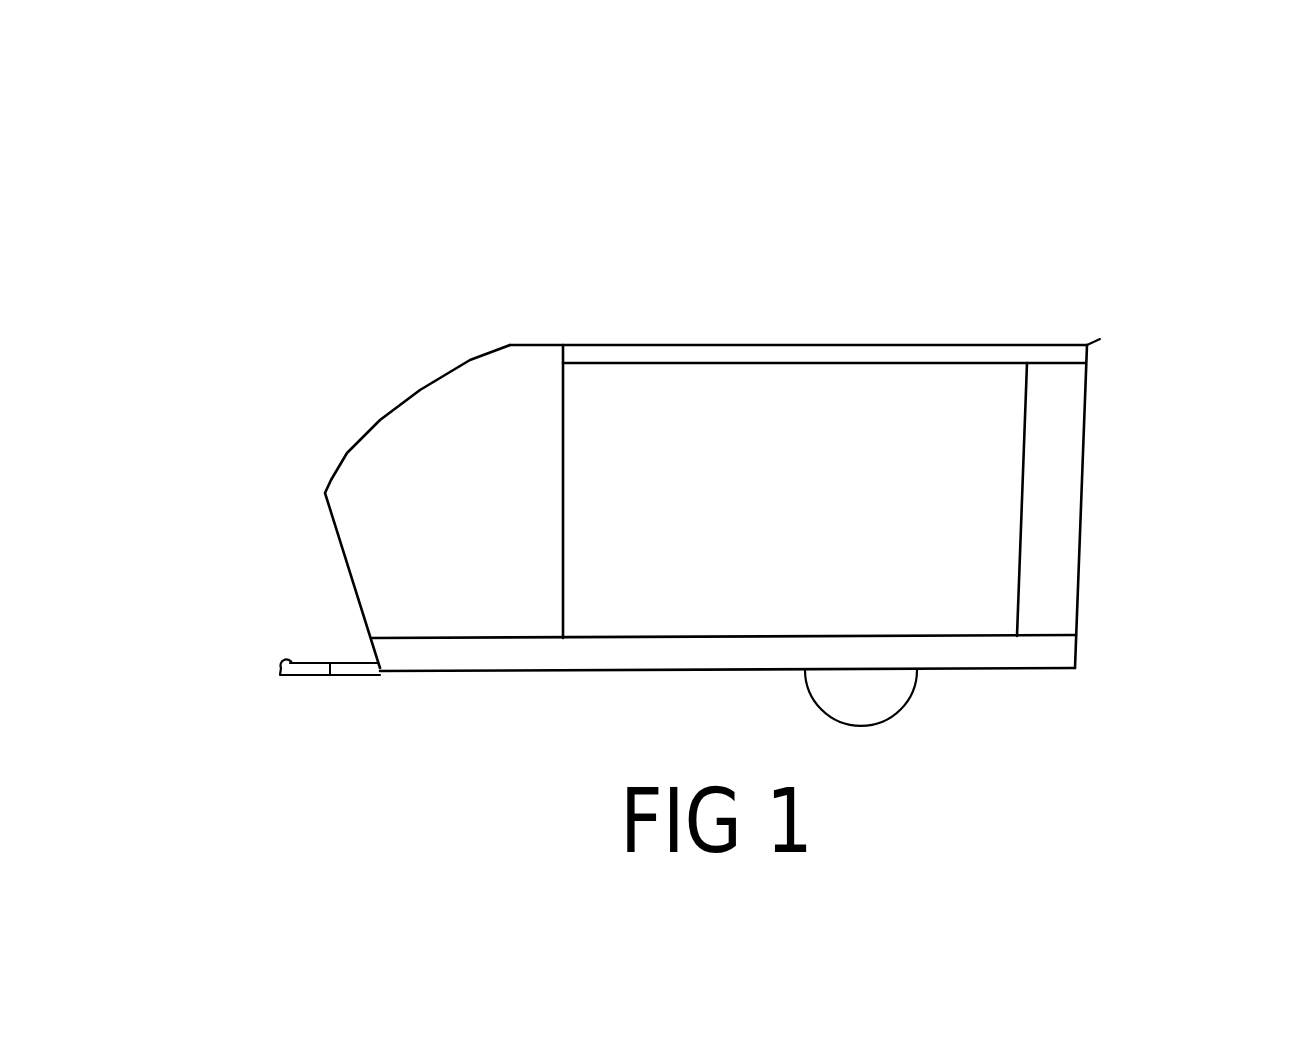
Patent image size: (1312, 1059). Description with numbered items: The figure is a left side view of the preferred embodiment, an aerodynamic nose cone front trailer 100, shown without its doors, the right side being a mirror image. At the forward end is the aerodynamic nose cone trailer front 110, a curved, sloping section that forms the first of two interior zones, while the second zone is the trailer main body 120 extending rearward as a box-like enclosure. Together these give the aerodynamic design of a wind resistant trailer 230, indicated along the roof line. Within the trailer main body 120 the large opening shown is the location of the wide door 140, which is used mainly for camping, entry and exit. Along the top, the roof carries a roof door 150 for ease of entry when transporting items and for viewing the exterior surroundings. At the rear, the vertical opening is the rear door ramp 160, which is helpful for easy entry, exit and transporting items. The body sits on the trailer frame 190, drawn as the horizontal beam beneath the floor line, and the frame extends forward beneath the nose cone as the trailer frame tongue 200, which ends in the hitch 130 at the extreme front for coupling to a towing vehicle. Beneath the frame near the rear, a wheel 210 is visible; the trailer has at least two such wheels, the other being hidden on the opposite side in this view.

The aerodynamic nose cone front trailer 100 is at (830, 337).
The aerodynamic nose cone trailer front 110 is at (488, 337).
The trailer main body 120 is at (615, 338).
The hitch 130 is at (310, 655).
The wide door 140 is at (790, 405).
The roof door 150 is at (1000, 337).
The rear door ramp 160 is at (1093, 452).
The trailer frame 190 is at (1077, 644).
The trailer frame tongue 200 is at (338, 683).
The wheel 210 is at (917, 702).
The aerodynamic design of a wind resistant trailer 230 is at (1042, 213).